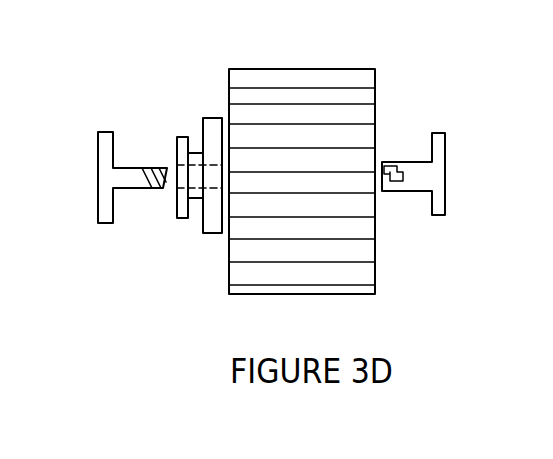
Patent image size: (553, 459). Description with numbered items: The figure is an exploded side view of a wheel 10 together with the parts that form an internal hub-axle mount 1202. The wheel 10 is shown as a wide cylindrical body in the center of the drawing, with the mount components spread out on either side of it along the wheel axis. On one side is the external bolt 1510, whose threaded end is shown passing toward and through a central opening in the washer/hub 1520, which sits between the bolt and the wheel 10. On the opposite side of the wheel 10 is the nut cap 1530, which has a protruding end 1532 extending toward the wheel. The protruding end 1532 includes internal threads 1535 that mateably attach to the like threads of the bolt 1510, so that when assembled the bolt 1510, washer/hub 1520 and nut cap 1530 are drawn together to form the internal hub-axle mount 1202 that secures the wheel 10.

The wheel 10 is at (310, 79).
The internal hub-axle mount 1202 is at (141, 175).
The external bolt 1510 is at (103, 212).
The washer/hub 1520 is at (210, 222).
The nut cap 1530 is at (421, 178).
The protruding end 1532 is at (138, 167).
The internal threads 1535 is at (382, 163).